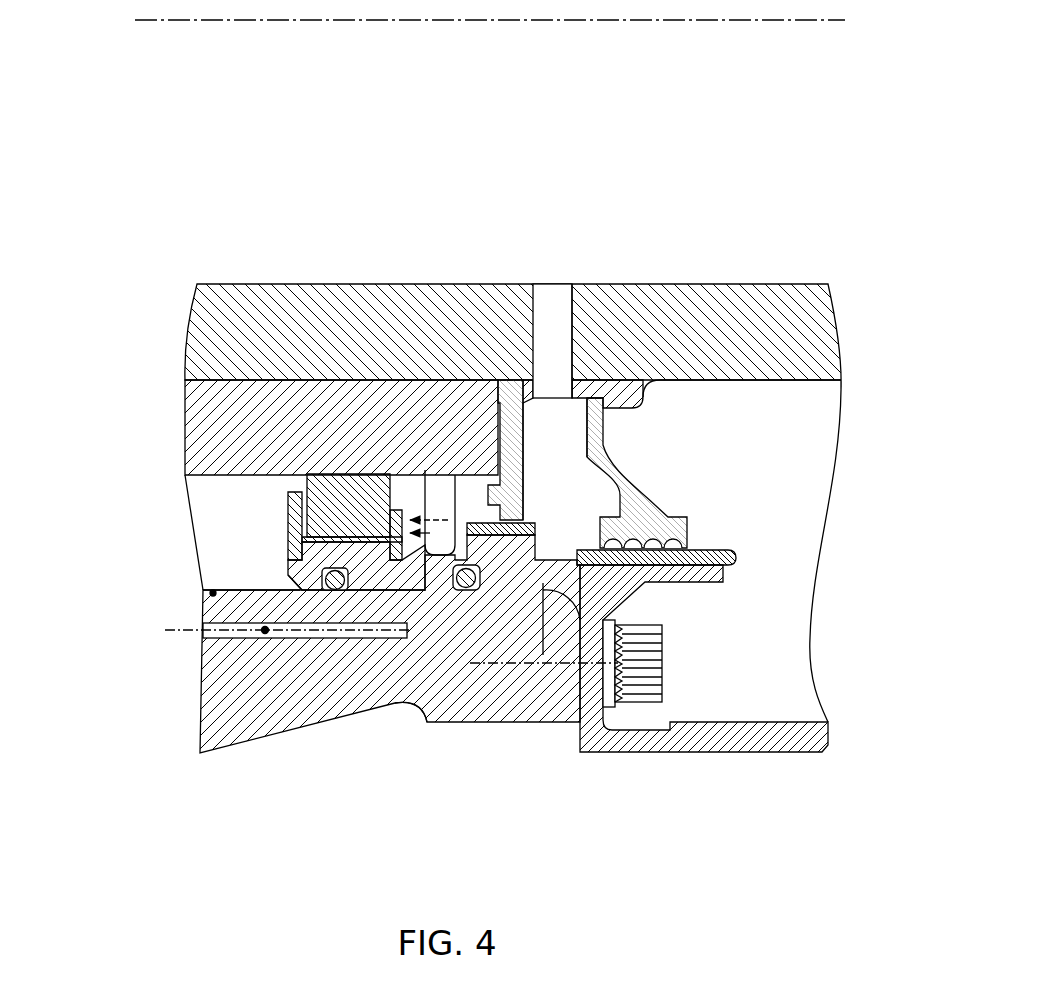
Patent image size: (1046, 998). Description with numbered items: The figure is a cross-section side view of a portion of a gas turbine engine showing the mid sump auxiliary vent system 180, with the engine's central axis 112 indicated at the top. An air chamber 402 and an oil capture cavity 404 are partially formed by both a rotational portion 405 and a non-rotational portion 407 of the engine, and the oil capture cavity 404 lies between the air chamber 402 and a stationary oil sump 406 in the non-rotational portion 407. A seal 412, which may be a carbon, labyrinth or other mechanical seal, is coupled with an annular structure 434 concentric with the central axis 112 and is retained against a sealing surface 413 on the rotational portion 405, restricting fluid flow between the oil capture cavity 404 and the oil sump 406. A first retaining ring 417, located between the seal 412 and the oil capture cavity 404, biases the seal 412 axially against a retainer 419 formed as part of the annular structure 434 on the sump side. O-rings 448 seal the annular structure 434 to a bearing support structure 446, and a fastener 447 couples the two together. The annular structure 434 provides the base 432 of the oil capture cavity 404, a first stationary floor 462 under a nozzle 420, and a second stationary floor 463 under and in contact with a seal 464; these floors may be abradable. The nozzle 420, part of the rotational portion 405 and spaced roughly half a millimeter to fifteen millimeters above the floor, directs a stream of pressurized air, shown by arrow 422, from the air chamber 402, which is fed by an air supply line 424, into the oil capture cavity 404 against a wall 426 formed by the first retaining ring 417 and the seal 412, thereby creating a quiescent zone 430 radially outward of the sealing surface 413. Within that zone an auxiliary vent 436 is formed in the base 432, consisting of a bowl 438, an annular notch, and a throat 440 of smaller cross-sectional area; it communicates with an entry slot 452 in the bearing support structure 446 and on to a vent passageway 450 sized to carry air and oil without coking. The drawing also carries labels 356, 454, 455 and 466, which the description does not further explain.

The central axis 112 is at (218, 30).
The mid sump auxiliary vent system 180 is at (740, 152).
The pin slot 356 is at (262, 630).
The air chamber 402 is at (566, 438).
The oil capture cavity 404 is at (502, 520).
The rotational portion 405 is at (130, 407).
The oil sump 406 is at (214, 542).
The non-rotational portion 407 is at (152, 567).
The seal 412 is at (326, 515).
The sealing surface 413 is at (353, 470).
The first retaining ring 417 is at (398, 515).
The retainer 419 is at (290, 516).
The nozzle 420 is at (552, 400).
The arrow 422 is at (438, 518).
The air supply line 424 is at (562, 300).
The wall 426 is at (418, 712).
The quiescent zone 430 is at (488, 478).
The base 432 is at (535, 600).
The annular structure 434 is at (543, 640).
The auxiliary vent 436 is at (458, 506).
The bowl 438 is at (466, 588).
The throat 440 is at (461, 540).
The bearing support structure 446 is at (552, 722).
The fastener 447 is at (668, 662).
The O-rings 448 is at (337, 590).
The vent passageway 450 is at (340, 590).
The entry slot 452 is at (395, 588).
The housing seam 454 is at (213, 592).
The carrier chamfer 455 is at (222, 582).
The first stationary floor 462 is at (528, 520).
The second stationary floor 463 is at (724, 550).
The seal 464 is at (648, 512).
The spring cavity 466 is at (677, 442).